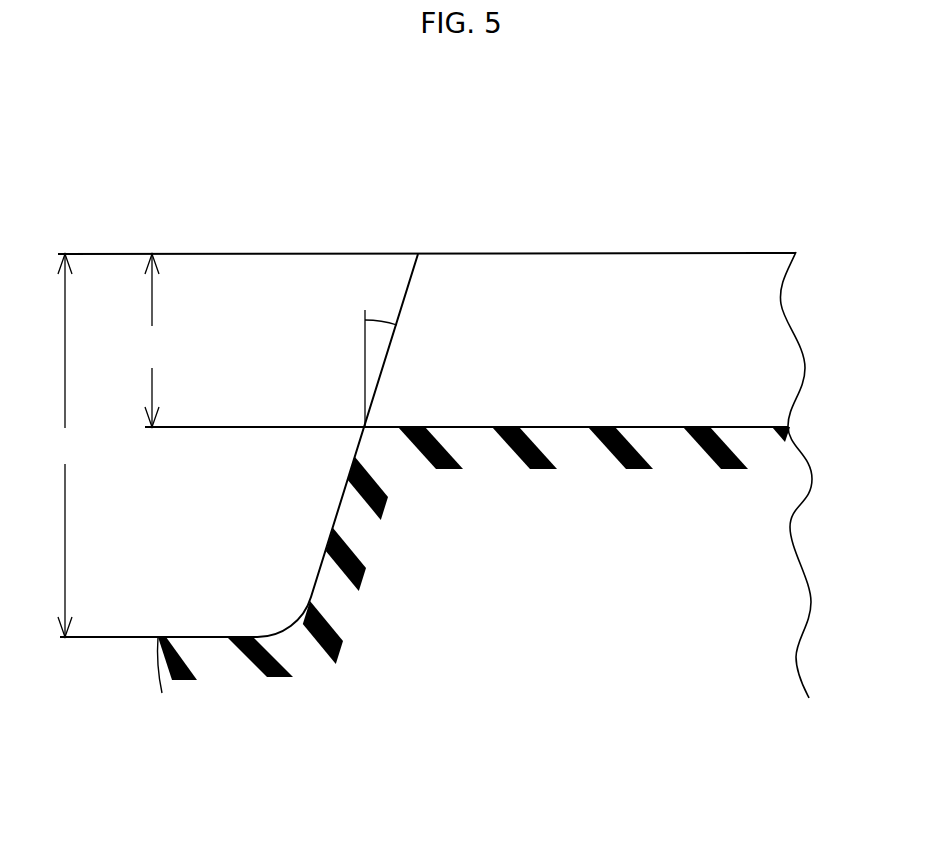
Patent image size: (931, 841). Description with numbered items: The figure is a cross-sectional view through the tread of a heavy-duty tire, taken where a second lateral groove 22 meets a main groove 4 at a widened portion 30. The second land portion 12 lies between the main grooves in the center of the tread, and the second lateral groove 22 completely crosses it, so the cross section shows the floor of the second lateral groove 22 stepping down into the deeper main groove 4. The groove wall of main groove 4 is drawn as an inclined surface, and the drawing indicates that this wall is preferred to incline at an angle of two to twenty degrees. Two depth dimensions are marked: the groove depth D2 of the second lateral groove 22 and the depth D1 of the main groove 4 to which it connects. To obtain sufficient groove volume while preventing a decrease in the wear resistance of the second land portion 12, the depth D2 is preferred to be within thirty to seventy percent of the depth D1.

The second land portion 12 is at (553, 240).
The second lateral groove 22 is at (605, 417).
The widened portion 30 is at (431, 427).
The main groove 4 is at (190, 637).
The depth of main groove D1 is at (65, 445).
The groove depth of second lateral groove D2 is at (150, 340).